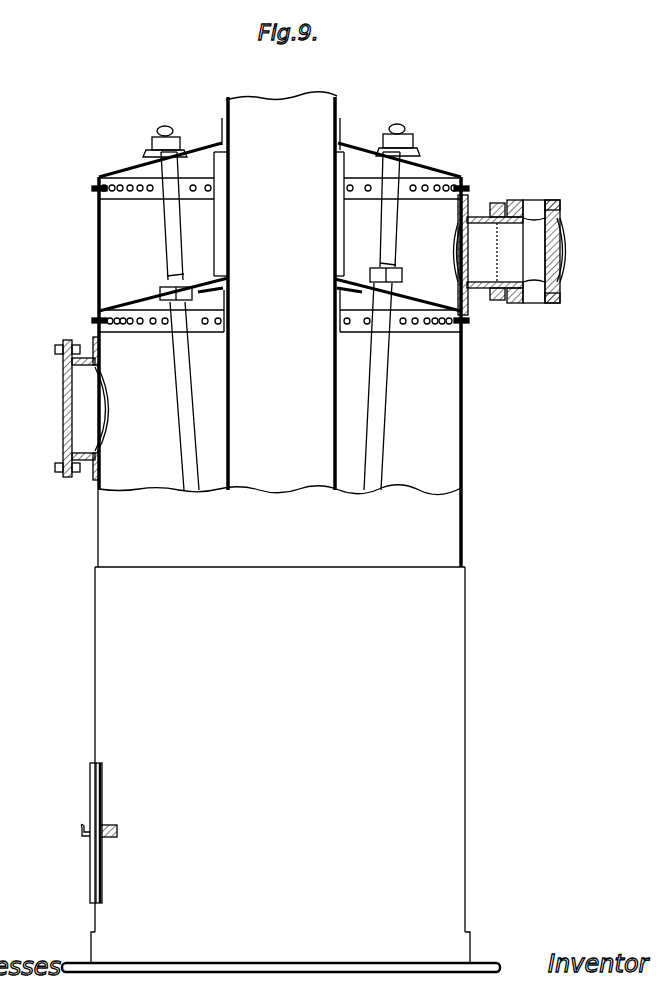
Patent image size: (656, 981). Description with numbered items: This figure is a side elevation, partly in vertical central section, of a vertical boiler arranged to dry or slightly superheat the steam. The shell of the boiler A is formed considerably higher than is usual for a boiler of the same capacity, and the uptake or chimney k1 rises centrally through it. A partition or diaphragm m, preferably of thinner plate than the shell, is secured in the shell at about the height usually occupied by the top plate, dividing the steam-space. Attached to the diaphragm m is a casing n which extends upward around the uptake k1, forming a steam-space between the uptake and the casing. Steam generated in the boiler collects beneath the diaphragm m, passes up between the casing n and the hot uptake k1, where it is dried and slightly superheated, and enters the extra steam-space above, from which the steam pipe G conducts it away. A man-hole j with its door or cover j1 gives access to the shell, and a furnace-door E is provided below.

The shell of the boiler A is at (281, 574).
The furnace-door E is at (94, 833).
The steam pipe G is at (510, 255).
The man-hole j is at (90, 408).
The man-hole door or cover j1 is at (63, 412).
The uptake or chimney k1 is at (280, 291).
The partition or diaphragm m is at (144, 296).
The casing n is at (217, 236).